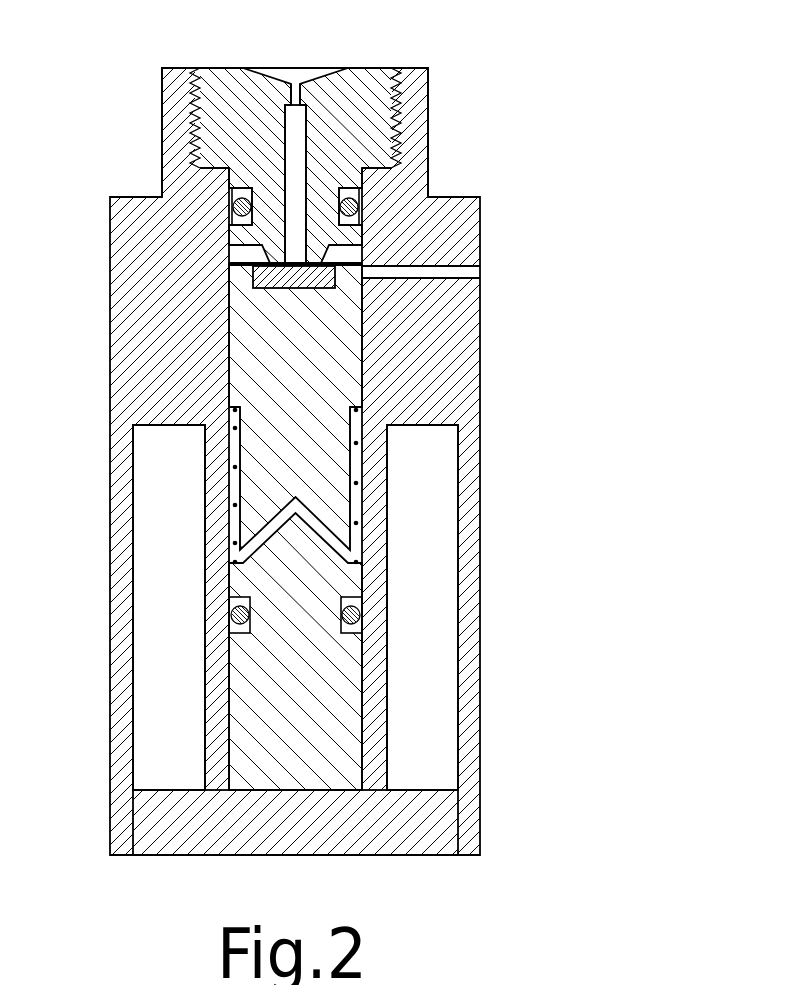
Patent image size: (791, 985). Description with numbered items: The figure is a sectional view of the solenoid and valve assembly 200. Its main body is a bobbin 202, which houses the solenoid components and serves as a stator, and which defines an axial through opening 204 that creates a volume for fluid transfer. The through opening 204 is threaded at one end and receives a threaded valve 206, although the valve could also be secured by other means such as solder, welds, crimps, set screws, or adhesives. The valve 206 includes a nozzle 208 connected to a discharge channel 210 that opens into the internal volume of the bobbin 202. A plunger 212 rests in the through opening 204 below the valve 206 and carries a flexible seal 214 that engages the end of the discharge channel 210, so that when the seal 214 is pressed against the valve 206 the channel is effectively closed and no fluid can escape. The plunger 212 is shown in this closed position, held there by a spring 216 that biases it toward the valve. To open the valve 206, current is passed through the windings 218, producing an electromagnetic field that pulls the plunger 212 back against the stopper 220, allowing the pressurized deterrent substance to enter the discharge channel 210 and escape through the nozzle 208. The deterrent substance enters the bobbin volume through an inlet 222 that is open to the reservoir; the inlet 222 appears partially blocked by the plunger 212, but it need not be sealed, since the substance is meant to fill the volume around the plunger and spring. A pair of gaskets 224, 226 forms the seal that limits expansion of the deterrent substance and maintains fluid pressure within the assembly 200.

The solenoid and valve assembly 200 is at (613, 67).
The bobbin 202 is at (428, 97).
The axial through opening 204 is at (240, 255).
The threaded valve 206 is at (370, 78).
The nozzle 208 is at (300, 77).
The discharge channel 210 is at (297, 133).
The plunger 212 is at (322, 382).
The seal 214 is at (362, 312).
The spring 216 is at (362, 405).
The windings 218 is at (423, 507).
The stopper 220 is at (442, 840).
The inlet 222 is at (467, 272).
The gasket 224 is at (362, 200).
The gasket 226 is at (362, 610).